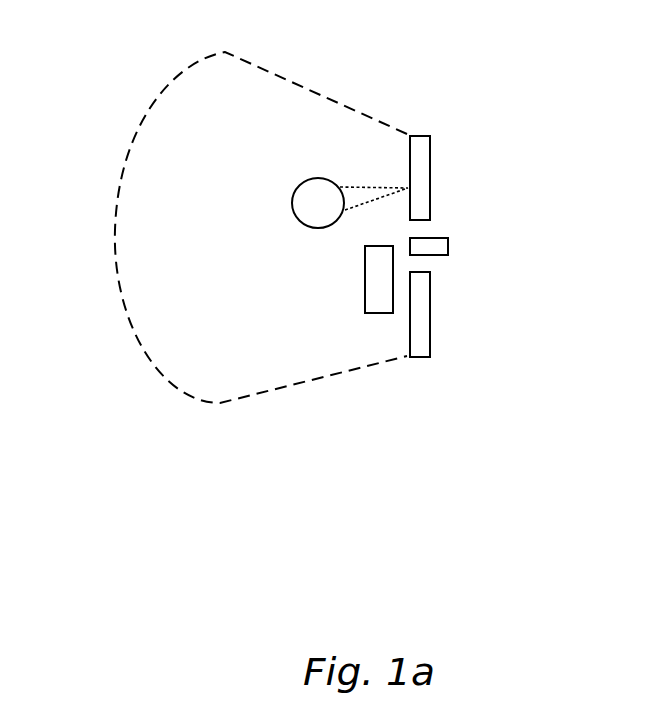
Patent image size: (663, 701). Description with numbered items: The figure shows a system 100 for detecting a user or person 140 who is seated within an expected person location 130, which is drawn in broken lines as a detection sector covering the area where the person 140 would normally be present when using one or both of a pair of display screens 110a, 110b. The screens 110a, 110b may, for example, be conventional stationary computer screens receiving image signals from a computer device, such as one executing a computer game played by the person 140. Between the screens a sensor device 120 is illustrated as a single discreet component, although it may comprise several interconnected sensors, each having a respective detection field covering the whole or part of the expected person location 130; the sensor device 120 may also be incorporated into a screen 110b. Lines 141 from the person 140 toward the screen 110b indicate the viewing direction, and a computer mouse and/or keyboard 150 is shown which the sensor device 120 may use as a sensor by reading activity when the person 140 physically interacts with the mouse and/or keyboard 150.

The system 100 is at (445, 392).
The display screen 110a is at (430, 312).
The display screen 110b is at (430, 178).
The sensor device 120 is at (448, 246).
The expected person location 130 is at (318, 92).
The person 140 is at (291, 203).
The camera field of view lines 141 is at (375, 200).
The computer mouse and/or keyboard 150 is at (372, 313).